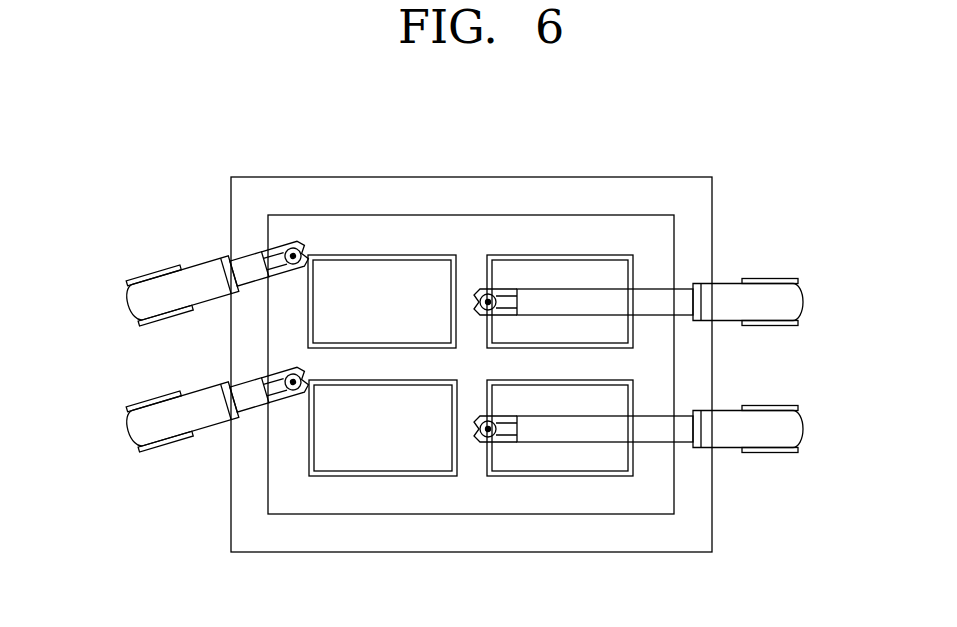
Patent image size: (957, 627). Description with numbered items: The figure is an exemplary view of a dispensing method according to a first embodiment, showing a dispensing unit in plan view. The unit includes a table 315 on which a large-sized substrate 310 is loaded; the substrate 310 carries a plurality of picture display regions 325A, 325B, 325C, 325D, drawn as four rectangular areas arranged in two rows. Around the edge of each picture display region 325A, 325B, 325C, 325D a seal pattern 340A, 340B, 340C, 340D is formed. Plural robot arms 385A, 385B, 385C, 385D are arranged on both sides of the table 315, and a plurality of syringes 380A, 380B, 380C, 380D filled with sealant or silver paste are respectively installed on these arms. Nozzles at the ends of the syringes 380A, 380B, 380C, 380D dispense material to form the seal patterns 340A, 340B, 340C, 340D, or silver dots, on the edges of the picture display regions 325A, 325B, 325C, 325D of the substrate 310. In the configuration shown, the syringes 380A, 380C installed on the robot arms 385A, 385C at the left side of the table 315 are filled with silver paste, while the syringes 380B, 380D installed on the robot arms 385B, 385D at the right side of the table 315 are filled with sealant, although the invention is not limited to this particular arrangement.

The table 315 is at (240, 177).
The large-sized substrate 310 is at (268, 226).
The seal pattern 340A is at (397, 254).
The seal pattern 340B is at (573, 254).
The seal pattern 340C is at (392, 477).
The seal pattern 340D is at (575, 477).
The picture display region 325A is at (398, 308).
The picture display region 325B is at (574, 285).
The picture display region 325C is at (399, 432).
The picture display region 325D is at (578, 410).
The syringe 380A is at (297, 243).
The syringe 380B is at (478, 288).
The syringe 380C is at (290, 395).
The syringe 380D is at (482, 440).
The robot arm 385A is at (138, 305).
The robot arm 385B is at (798, 302).
The robot arm 385C is at (138, 430).
The robot arm 385D is at (798, 430).